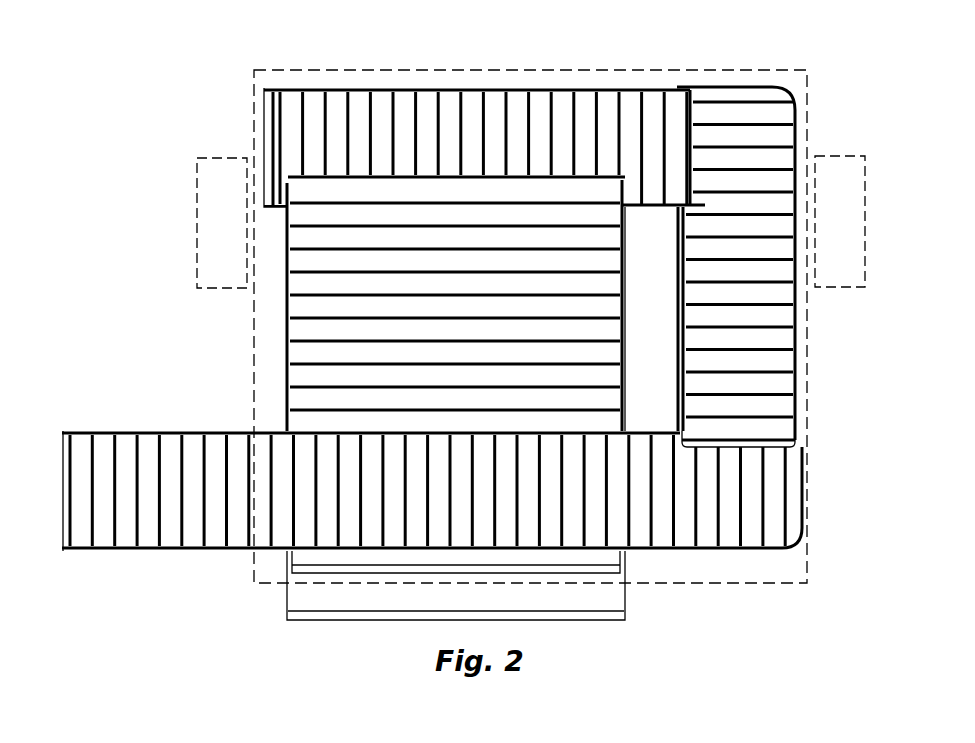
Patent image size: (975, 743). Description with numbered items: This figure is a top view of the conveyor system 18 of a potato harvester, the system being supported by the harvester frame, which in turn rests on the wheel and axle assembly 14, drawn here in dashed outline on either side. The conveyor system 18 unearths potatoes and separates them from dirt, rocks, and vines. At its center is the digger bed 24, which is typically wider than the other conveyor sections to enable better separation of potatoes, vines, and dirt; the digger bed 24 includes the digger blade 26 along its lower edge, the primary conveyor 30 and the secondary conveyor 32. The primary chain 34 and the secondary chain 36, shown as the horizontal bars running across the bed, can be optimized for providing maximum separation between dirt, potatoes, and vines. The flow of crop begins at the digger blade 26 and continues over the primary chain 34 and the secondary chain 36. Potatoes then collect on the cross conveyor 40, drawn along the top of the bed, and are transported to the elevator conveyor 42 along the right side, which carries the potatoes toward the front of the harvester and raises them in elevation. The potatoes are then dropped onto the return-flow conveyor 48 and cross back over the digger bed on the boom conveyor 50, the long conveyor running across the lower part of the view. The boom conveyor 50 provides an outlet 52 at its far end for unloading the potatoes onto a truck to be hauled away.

The wheel and axle assembly 14 is at (840, 156).
The conveyor system 18 is at (798, 88).
The digger bed 24 is at (560, 624).
The digger blade 26 is at (322, 620).
The primary conveyor 30 is at (283, 413).
The secondary conveyor 32 is at (283, 288).
The primary chain 34 is at (337, 405).
The secondary chain 36 is at (328, 245).
The cross conveyor 40 is at (396, 89).
The elevator conveyor 42 is at (797, 350).
The return-flow conveyor 48 is at (683, 549).
The boom conveyor 50 is at (407, 549).
The outlet 52 is at (65, 505).